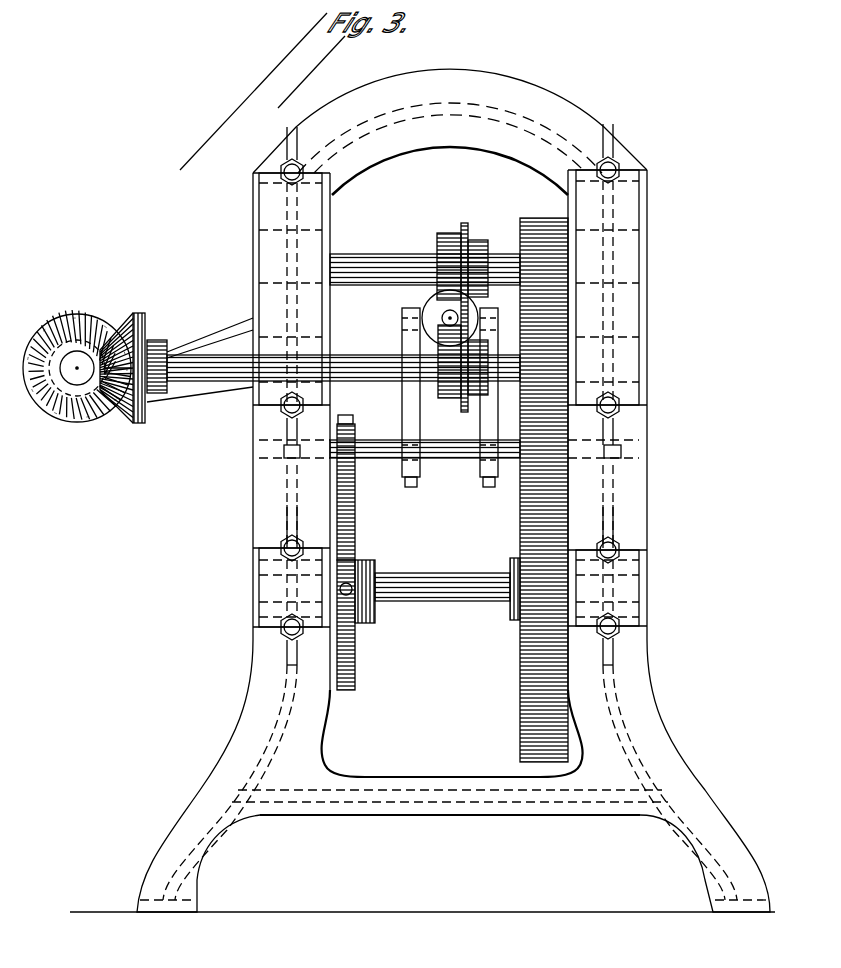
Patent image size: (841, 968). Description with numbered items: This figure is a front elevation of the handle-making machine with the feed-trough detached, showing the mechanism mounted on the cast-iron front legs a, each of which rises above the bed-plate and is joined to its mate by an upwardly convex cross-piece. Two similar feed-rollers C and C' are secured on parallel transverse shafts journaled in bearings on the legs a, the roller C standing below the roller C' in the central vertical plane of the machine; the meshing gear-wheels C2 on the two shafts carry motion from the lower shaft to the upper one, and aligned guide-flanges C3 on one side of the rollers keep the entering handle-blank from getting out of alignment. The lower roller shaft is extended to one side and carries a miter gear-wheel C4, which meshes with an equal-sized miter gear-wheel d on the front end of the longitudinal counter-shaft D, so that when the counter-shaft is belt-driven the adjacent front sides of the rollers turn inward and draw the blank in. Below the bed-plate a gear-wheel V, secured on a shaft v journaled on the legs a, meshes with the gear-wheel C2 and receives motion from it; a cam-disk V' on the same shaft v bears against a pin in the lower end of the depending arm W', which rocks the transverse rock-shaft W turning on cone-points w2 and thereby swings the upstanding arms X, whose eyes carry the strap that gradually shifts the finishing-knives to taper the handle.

The front leg a is at (258, 732).
The counter-shaft D is at (78, 372).
The miter gear-wheel d is at (92, 318).
The miter gear-wheel C4 is at (135, 320).
The feed-roller C is at (343, 377).
The feed-roller C' is at (425, 273).
The gear-wheel C2 is at (538, 226).
The guide-flange C3 is at (462, 240).
The arm X is at (406, 402).
The rock-shaft W is at (425, 463).
The arm W' is at (356, 487).
The cone-point w2 is at (672, 446).
The gear-wheel V is at (506, 566).
The cam-disk V' is at (362, 600).
The shaft v is at (478, 578).